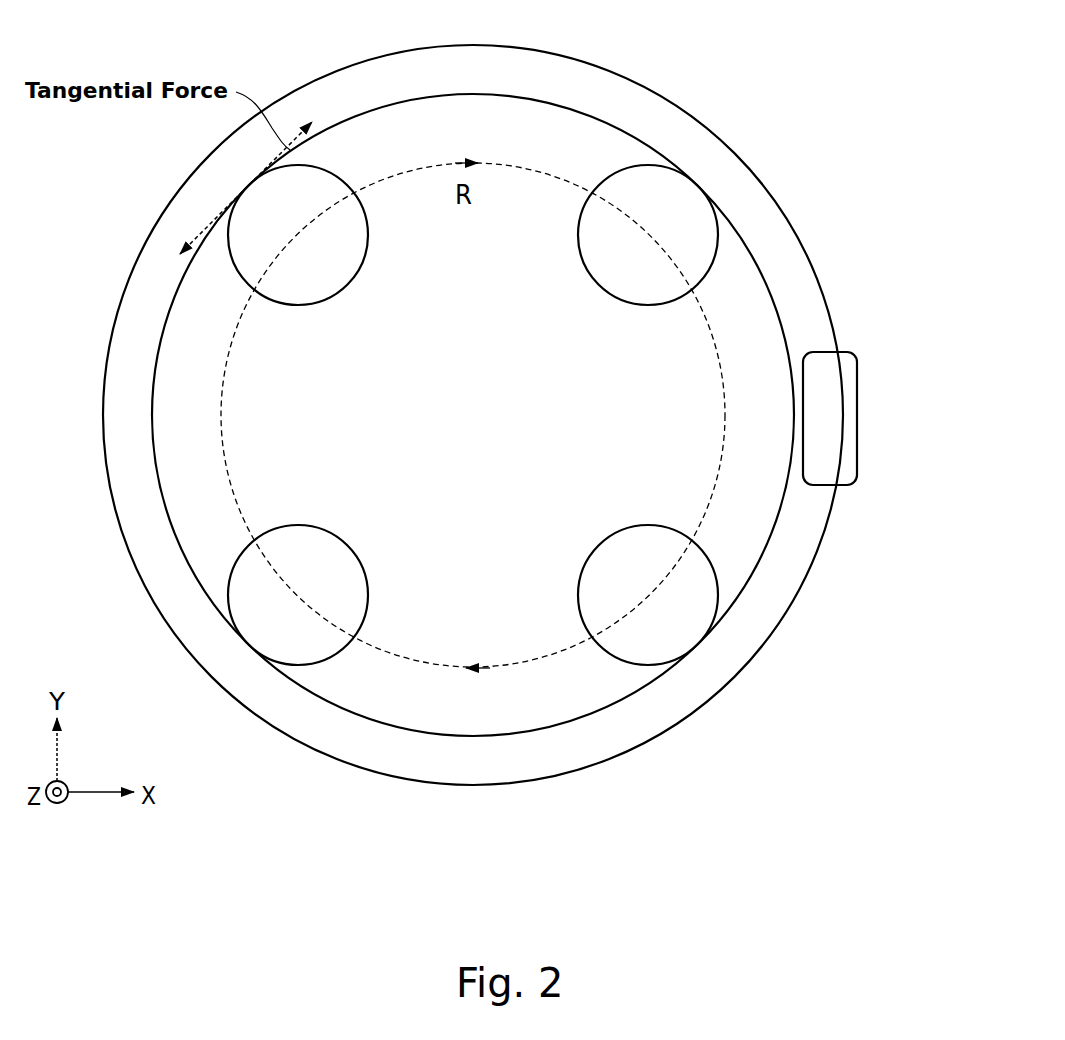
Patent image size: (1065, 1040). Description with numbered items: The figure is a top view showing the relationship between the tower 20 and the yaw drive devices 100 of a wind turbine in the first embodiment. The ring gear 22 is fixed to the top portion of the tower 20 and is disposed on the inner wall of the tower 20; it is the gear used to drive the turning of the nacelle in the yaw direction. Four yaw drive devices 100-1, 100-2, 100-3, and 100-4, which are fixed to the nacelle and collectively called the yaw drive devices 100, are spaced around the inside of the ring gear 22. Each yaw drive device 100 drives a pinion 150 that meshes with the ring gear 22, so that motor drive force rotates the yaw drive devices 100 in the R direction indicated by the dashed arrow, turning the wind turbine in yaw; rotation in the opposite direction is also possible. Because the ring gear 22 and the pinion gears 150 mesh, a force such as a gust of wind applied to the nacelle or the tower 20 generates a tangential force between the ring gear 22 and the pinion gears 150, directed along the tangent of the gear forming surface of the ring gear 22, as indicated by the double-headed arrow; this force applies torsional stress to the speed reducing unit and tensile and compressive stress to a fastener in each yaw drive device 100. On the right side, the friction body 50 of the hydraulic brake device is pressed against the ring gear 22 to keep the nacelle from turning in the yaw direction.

The tower 20 is at (643, 78).
The ring gear 22 is at (541, 101).
The friction body 50 is at (858, 410).
The yaw drive device 100 is at (473, 415).
The yaw drive device 100-1 is at (358, 258).
The yaw drive device 100-2 is at (611, 282).
The yaw drive device 100-3 is at (593, 596).
The yaw drive device 100-4 is at (345, 565).
The pinion 150 is at (320, 306).